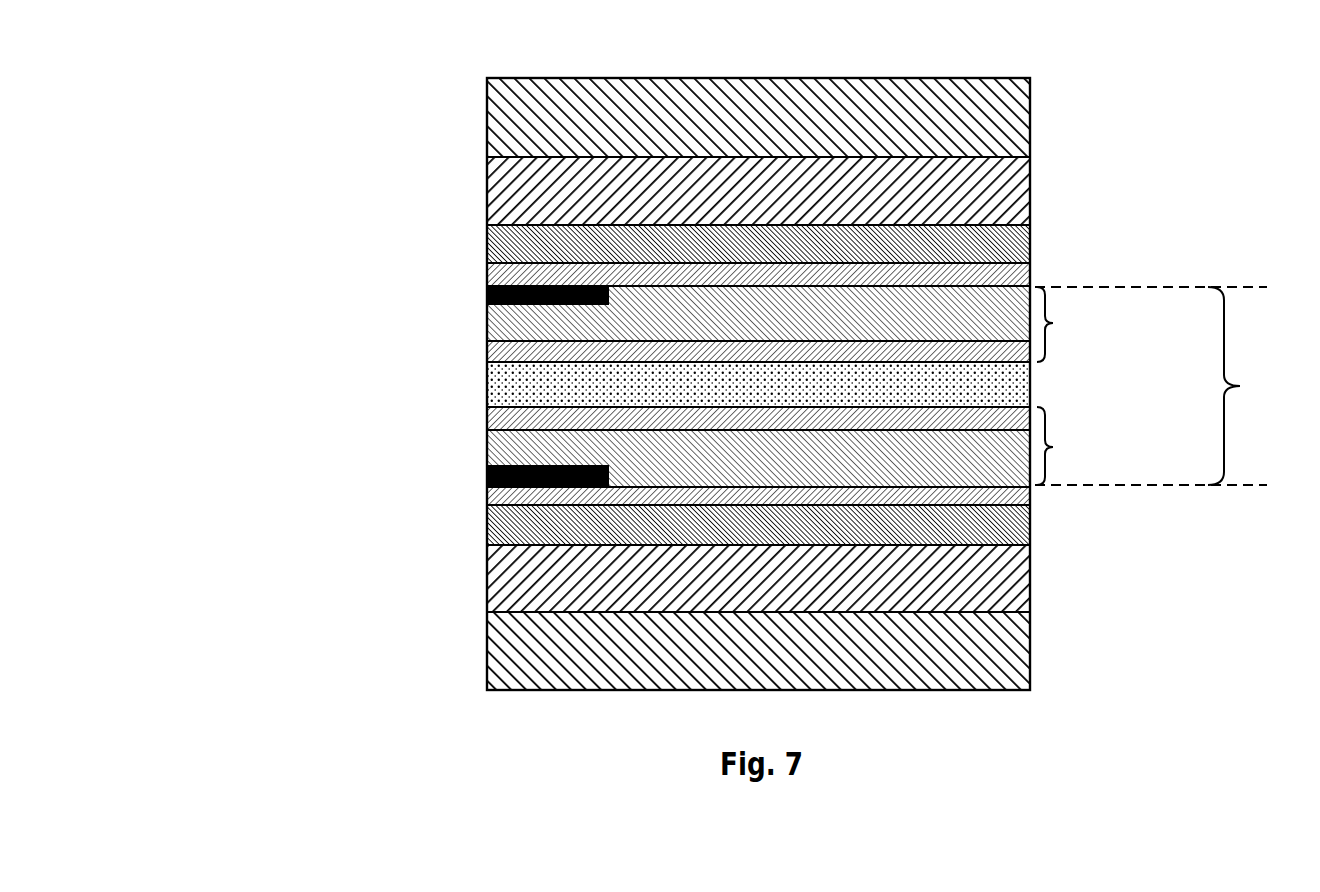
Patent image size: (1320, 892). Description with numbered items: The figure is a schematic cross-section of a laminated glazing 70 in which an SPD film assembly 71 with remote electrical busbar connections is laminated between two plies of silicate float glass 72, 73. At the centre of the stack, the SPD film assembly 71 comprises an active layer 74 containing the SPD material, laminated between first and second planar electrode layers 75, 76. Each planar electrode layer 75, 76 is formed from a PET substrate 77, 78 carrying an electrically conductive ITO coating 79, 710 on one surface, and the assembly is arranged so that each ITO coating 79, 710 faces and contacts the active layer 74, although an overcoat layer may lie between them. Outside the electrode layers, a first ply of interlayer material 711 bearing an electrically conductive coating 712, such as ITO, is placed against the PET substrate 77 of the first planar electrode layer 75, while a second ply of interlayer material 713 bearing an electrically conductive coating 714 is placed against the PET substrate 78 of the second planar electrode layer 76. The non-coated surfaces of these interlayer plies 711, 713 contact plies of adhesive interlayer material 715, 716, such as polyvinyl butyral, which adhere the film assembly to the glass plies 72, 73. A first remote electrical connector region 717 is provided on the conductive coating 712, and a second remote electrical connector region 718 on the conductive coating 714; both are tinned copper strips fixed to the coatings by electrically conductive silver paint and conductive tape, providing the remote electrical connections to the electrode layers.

The laminated glazing 70 is at (1116, 97).
The SPD film assembly 71 is at (1165, 386).
The ply of silicate float glass 72 is at (487, 123).
The ply of silicate float glass 73 is at (525, 668).
The active layer 74 is at (495, 382).
The first planar electrode layer 75 is at (1072, 324).
The second planar electrode layer 76 is at (1072, 446).
The PET substrate 77 is at (495, 330).
The PET substrate 78 is at (495, 445).
The electrically conductive ITO coating 79 is at (490, 348).
The electrically conductive ITO coating 710 is at (495, 418).
The first ply of interlayer material 711 is at (487, 240).
The electrically conductive coating 712 is at (487, 273).
The second ply of interlayer material 713 is at (487, 528).
The electrically conductive coating 714 is at (487, 495).
The ply of adhesive interlayer material 715 is at (525, 193).
The ply of adhesive interlayer material 716 is at (525, 583).
The first remote electrical connector region 717 is at (487, 299).
The second remote electrical connector region 718 is at (487, 473).